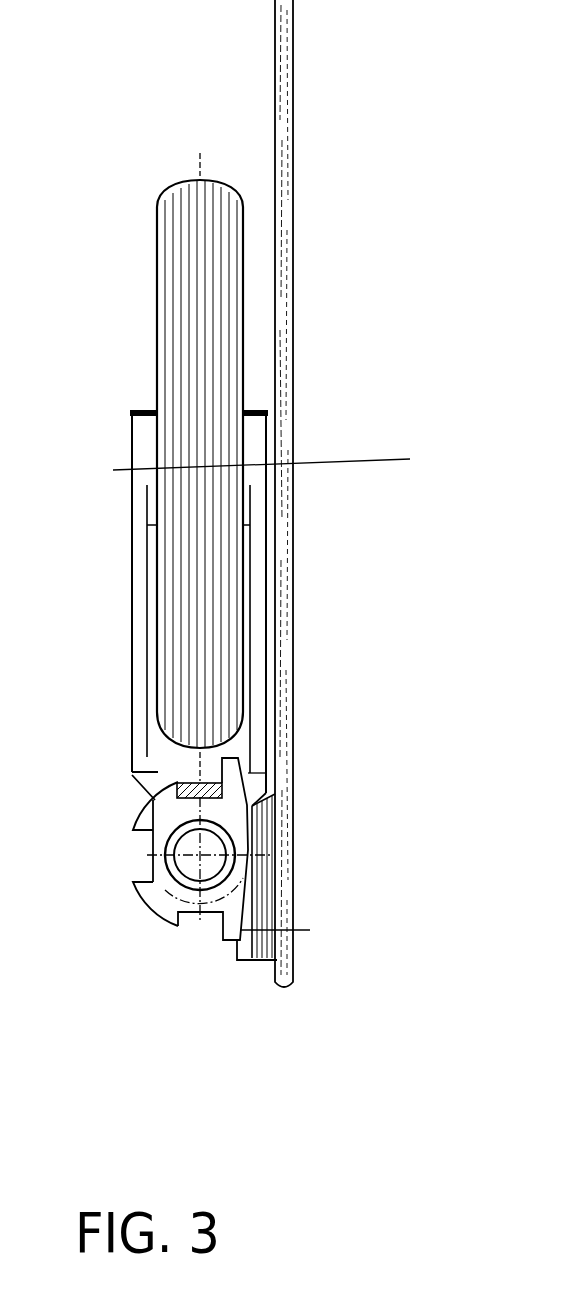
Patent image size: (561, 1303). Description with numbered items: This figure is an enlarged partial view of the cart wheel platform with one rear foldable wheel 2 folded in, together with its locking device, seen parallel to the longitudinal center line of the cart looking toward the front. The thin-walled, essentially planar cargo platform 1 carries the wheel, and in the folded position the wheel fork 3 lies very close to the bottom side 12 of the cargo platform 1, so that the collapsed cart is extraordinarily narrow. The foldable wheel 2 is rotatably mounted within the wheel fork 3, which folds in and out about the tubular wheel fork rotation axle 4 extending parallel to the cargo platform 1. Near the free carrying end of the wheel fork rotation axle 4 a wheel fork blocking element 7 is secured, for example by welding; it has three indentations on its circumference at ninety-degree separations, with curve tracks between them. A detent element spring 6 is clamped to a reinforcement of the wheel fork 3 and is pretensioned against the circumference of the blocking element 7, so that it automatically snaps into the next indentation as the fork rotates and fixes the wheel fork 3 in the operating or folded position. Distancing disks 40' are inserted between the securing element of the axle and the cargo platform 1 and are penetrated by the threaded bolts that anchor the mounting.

The cargo platform 1 is at (285, 794).
The foldable wheel 2 is at (178, 250).
The wheel fork 3 is at (137, 512).
The wheel fork rotation axle 4 is at (186, 872).
The detent element spring 6 is at (200, 780).
The wheel fork blocking element 7 is at (158, 900).
The bottom side 12 is at (277, 38).
The distancing disk 40' is at (341, 876).